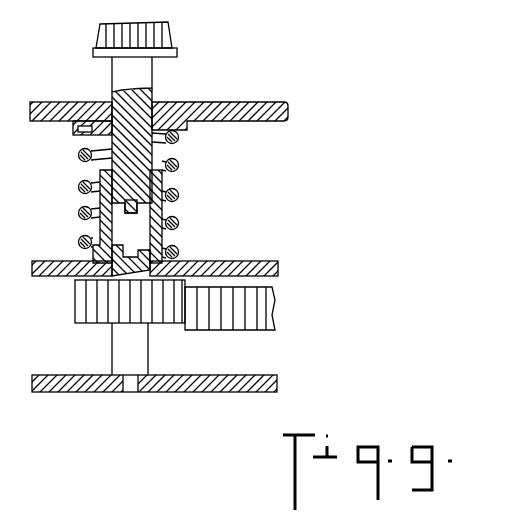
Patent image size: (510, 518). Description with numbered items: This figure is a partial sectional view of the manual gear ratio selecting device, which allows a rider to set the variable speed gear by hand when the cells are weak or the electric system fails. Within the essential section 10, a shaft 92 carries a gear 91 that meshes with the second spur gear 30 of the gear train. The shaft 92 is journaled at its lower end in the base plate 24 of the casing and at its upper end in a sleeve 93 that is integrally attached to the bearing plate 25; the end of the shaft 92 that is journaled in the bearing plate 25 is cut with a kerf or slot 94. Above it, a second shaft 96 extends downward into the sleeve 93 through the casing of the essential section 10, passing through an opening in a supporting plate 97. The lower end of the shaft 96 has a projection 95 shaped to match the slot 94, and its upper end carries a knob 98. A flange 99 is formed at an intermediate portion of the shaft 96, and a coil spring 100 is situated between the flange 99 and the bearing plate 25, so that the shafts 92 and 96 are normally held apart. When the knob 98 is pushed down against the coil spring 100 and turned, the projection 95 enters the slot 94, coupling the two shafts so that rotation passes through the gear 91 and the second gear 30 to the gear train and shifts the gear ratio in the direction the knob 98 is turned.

The essential section 10 is at (236, 81).
The base plate 24 is at (231, 393).
The bearing plate 25 is at (267, 264).
The second spur gear 30 is at (256, 328).
The gear 91 is at (78, 312).
The shaft 92 is at (132, 393).
The sleeve 93 is at (102, 230).
The slot 94 is at (137, 251).
The projection 95 is at (126, 208).
The shaft 96 is at (148, 75).
The supporting plate 97 is at (272, 112).
The knob 98 is at (165, 40).
The flange 99 is at (75, 128).
The coil spring 100 is at (180, 165).